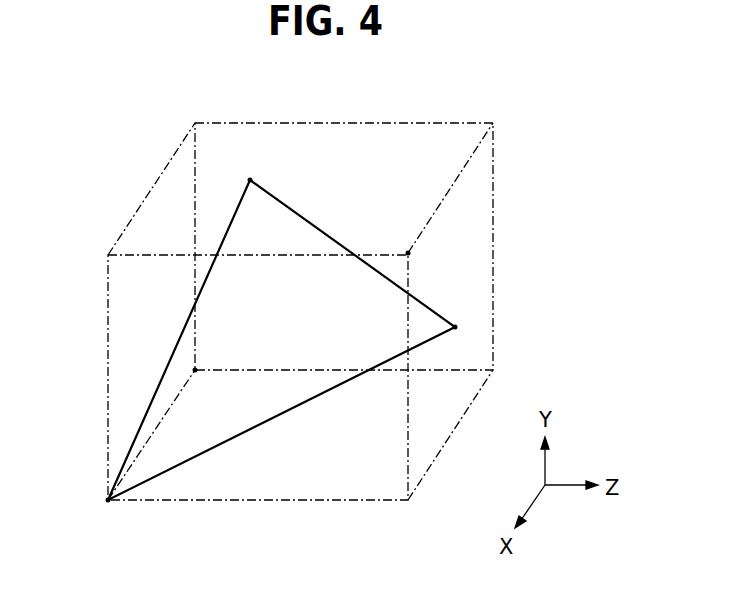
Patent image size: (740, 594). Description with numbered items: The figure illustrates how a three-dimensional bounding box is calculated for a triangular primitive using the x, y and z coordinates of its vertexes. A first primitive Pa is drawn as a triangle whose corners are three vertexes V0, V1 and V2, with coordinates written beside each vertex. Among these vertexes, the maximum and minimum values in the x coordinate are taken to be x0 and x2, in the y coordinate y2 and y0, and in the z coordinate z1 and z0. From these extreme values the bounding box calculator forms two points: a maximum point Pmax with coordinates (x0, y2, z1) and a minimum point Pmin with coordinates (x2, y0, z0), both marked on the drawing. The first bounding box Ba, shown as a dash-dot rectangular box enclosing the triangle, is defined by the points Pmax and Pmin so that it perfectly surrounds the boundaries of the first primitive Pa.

The first bounding box Ba is at (150, 191).
The first primitive Pa is at (333, 239).
The vertex V0 is at (102, 517).
The vertex V1 is at (513, 344).
The vertex V2 is at (260, 166).
The minimum point Pmin is at (194, 354).
The maximum point Pmax is at (441, 238).